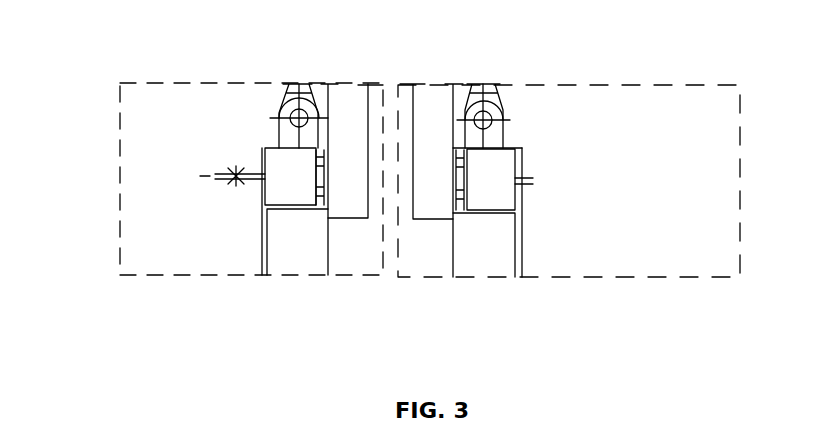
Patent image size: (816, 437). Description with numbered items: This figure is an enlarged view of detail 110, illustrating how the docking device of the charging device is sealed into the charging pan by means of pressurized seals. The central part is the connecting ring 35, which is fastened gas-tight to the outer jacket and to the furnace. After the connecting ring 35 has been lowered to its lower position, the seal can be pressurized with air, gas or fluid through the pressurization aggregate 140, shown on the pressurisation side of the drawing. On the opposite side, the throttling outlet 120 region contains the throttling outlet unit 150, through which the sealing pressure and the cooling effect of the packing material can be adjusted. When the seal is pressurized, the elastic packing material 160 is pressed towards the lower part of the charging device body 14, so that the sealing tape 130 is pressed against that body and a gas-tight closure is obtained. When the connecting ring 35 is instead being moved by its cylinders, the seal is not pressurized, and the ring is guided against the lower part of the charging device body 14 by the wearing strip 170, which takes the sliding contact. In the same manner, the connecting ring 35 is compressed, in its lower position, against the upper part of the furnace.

The charging device body 14 is at (440, 92).
The connecting ring 35 is at (467, 263).
The detail 110 is at (582, 87).
The throttling outlet zone 120 is at (152, 82).
The sealing tape 130 is at (455, 188).
The pressurization aggregate 140 is at (712, 181).
The throttling outlet unit 150 is at (254, 172).
The elastic packing material 160 is at (465, 188).
The wearing strip 170 is at (457, 203).